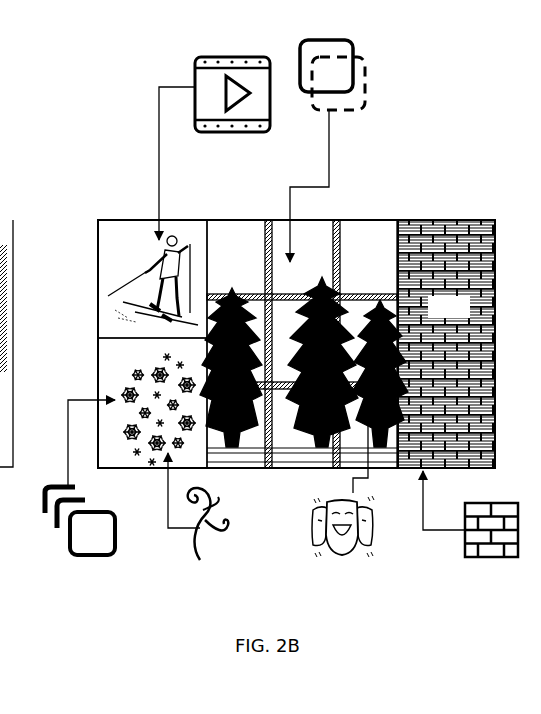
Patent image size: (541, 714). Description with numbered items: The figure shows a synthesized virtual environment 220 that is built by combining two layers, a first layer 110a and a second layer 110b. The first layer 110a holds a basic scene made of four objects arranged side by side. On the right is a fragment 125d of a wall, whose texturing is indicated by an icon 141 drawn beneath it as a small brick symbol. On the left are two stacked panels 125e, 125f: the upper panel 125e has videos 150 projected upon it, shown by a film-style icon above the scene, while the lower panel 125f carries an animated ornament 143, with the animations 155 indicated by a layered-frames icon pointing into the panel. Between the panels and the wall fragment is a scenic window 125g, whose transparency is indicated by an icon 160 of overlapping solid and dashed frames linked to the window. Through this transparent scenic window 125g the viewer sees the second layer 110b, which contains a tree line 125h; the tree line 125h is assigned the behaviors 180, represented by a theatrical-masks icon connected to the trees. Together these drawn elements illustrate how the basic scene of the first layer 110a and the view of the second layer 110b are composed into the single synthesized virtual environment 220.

The synthesized virtual environment 220 is at (122, 218).
The videos 150 is at (192, 80).
The icon 160 is at (368, 75).
The animations 155 is at (72, 553).
The animated ornament 143 is at (193, 538).
The behaviors 180 is at (318, 548).
The icon 141 is at (465, 547).
The panel 125e is at (152, 279).
The panel 125f is at (152, 403).
The scenic window 125g is at (338, 218).
The tree line 125h is at (312, 420).
The fragment of a wall 125d is at (410, 218).
The first layer 110a is at (449, 307).
The second layer 110b is at (368, 257).